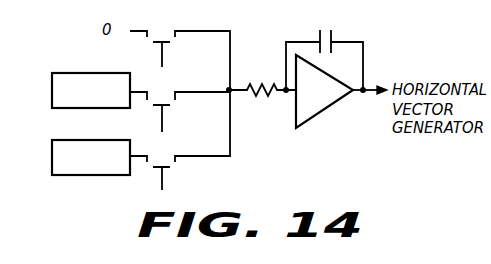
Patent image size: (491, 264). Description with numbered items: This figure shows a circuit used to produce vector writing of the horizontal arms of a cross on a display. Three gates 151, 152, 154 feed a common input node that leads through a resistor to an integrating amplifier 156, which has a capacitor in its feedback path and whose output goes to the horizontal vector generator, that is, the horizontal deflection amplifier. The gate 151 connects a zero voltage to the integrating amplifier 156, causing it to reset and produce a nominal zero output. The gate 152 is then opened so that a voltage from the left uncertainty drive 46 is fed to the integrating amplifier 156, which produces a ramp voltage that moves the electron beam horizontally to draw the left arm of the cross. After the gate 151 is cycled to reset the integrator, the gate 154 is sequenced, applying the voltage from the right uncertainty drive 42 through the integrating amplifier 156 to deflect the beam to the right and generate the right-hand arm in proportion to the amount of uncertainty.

The left uncertainty drive 46 is at (78, 72).
The right uncertainty drive 42 is at (75, 139).
The gate 151 is at (176, 40).
The gate 152 is at (176, 102).
The gate 154 is at (176, 164).
The integrating amplifier 156 is at (312, 112).